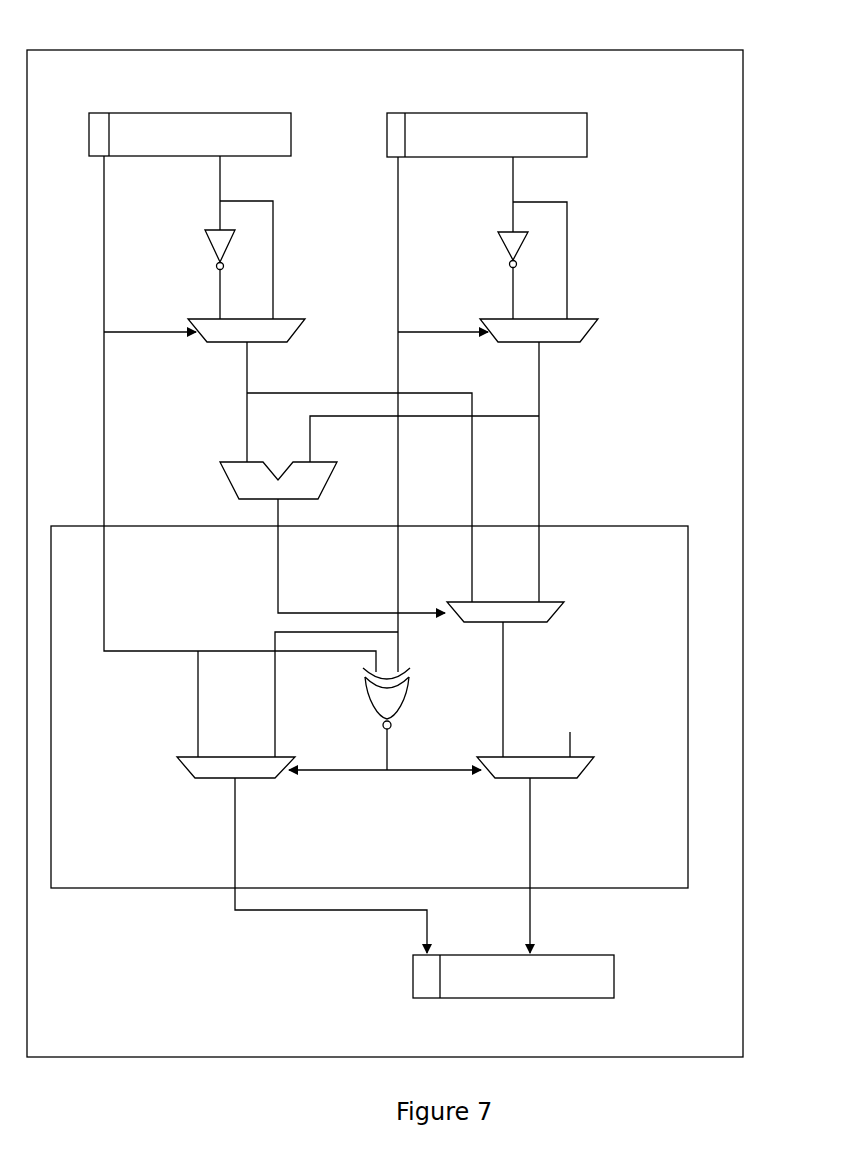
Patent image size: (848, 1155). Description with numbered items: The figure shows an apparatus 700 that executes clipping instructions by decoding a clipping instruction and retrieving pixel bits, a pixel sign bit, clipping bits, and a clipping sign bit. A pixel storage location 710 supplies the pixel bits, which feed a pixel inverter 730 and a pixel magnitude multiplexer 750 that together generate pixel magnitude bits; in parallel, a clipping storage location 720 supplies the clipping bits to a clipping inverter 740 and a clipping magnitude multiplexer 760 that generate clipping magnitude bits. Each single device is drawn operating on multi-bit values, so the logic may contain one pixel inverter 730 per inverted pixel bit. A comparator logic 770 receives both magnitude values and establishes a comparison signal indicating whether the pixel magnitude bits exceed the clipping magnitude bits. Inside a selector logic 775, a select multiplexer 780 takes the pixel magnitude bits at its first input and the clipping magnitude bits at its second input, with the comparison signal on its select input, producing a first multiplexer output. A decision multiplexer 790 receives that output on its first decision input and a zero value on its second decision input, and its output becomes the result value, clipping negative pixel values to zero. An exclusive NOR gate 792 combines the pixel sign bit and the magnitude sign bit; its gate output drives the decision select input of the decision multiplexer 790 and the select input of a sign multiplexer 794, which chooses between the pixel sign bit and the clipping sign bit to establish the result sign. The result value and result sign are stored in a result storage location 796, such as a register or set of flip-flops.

The apparatus 700 is at (490, 50).
The pixel storage location 710 is at (190, 113).
The clipping storage location 720 is at (488, 113).
The pixel inverter 730 is at (207, 248).
The clipping inverter 740 is at (500, 250).
The pixel magnitude multiplexer 750 is at (300, 335).
The clipping magnitude multiplexer 760 is at (592, 335).
The comparator logic 770 is at (228, 482).
The selector logic 775 is at (612, 525).
The select multiplexer 780 is at (560, 615).
The decision multiplexer 790 is at (590, 770).
The exclusive NOR gate 792 is at (408, 698).
The sign multiplexer 794 is at (182, 770).
The result storage location 796 is at (614, 975).